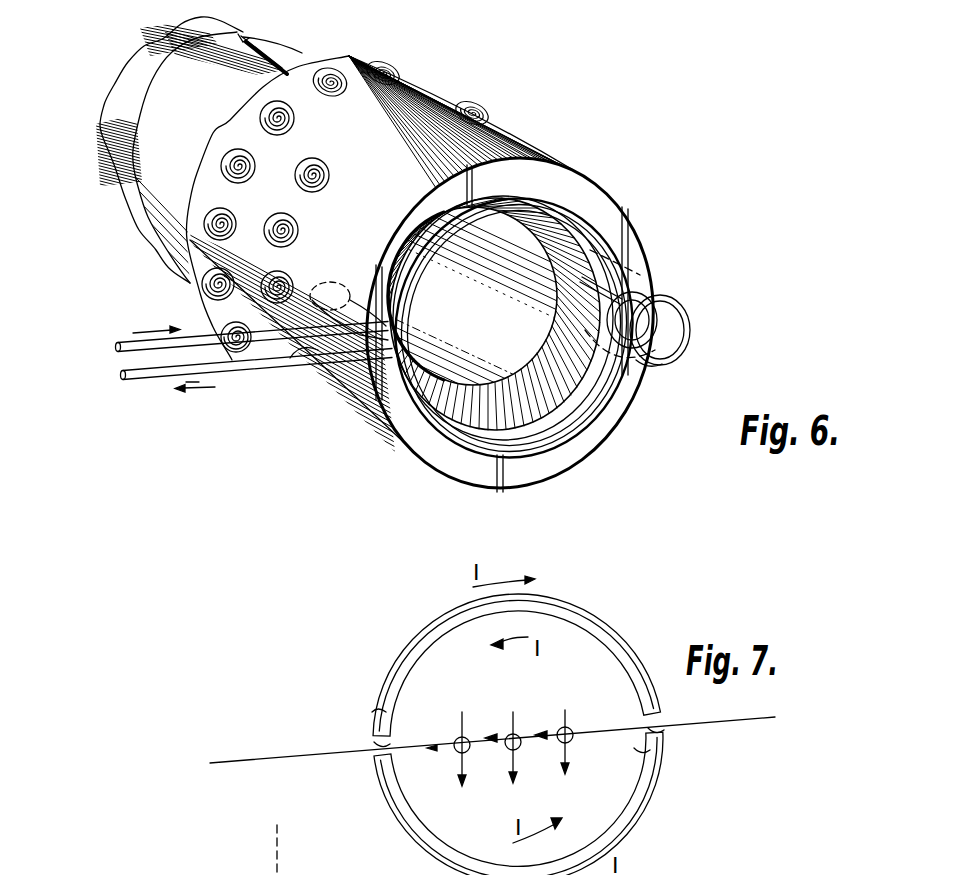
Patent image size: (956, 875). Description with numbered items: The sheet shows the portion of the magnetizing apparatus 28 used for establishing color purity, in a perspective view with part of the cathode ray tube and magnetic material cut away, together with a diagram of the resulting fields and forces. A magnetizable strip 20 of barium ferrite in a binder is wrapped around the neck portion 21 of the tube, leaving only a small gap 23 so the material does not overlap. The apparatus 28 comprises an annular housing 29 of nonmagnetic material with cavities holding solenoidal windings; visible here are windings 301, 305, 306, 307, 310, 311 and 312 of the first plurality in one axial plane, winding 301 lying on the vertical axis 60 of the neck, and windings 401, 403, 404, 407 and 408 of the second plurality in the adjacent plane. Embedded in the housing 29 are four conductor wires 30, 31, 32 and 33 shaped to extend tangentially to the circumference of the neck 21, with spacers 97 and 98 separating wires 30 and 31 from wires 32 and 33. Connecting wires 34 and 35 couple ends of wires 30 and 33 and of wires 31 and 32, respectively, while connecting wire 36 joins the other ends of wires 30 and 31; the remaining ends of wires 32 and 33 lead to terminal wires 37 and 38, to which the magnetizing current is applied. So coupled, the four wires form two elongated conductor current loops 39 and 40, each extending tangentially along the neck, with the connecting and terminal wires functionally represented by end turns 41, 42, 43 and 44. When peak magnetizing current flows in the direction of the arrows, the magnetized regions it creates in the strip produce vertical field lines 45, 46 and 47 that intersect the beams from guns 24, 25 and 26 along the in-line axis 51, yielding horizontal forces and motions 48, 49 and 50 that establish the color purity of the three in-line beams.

In FIG. 6, the magnetizable strip 20 is at (300, 52).
In FIG. 6, the neck portion 21 is at (243, 33).
In FIG. 6, the gap 23 is at (238, 44).
In FIG. 6, the magnetizing apparatus 28 is at (601, 141).
In FIG. 6, the annular housing 29 is at (445, 92).
In FIG. 6, the conductor wire 30 is at (605, 262).
In FIG. 6, the conductor wire 31 is at (625, 272).
In FIG. 6, the conductor wire 32 is at (605, 385).
In FIG. 6, the conductor wire 33 is at (585, 405).
In FIG. 6, the connecting wire 34 is at (691, 330).
In FIG. 6, the connecting wire 35 is at (655, 360).
In FIG. 6, the connecting wire 36 is at (330, 290).
In FIG. 6, the terminal wire 37 is at (118, 343).
In FIG. 6, the terminal wire 38 is at (134, 378).
In FIG. 6, the conductor current loop 39 is at (610, 255).
In FIG. 7, the conductor current loop 39 is at (444, 638).
In FIG. 6, the conductor current loop 40 is at (555, 410).
In FIG. 7, the conductor current loop 40 is at (623, 797).
In FIG. 6, the spacer 97 is at (362, 412).
In FIG. 6, the spacer 98 is at (660, 300).
In FIG. 6, the winding 301 is at (333, 63).
In FIG. 6, the winding 305 is at (203, 290).
In FIG. 6, the winding 306 is at (240, 148).
In FIG. 6, the winding 307 is at (398, 72).
In FIG. 6, the winding 310 is at (220, 320).
In FIG. 6, the winding 311 is at (205, 232).
In FIG. 6, the winding 312 is at (296, 118).
In FIG. 6, the winding 401 is at (488, 114).
In FIG. 6, the winding 403 is at (295, 368).
In FIG. 6, the winding 404 is at (358, 157).
In FIG. 6, the winding 407 is at (304, 262).
In FIG. 6, the winding 408 is at (297, 215).
In FIG. 7, the gun 24 is at (463, 718).
In FIG. 7, the gun 25 is at (513, 715).
In FIG. 7, the gun 26 is at (566, 710).
In FIG. 7, the end turn 41 is at (388, 722).
In FIG. 7, the end turn 42 is at (647, 734).
In FIG. 7, the end turn 43 is at (640, 750).
In FIG. 7, the end turn 44 is at (378, 747).
In FIG. 7, the vertical field line 45 is at (486, 779).
In FIG. 7, the vertical field line 46 is at (538, 775).
In FIG. 7, the vertical field line 47 is at (588, 770).
In FIG. 7, the horizontal force 48 is at (424, 724).
In FIG. 7, the horizontal force 49 is at (475, 721).
In FIG. 7, the horizontal force 50 is at (527, 714).
In FIG. 7, the in-line axis 51 is at (319, 752).
In FIG. 7, the vertical axis 60 is at (273, 842).